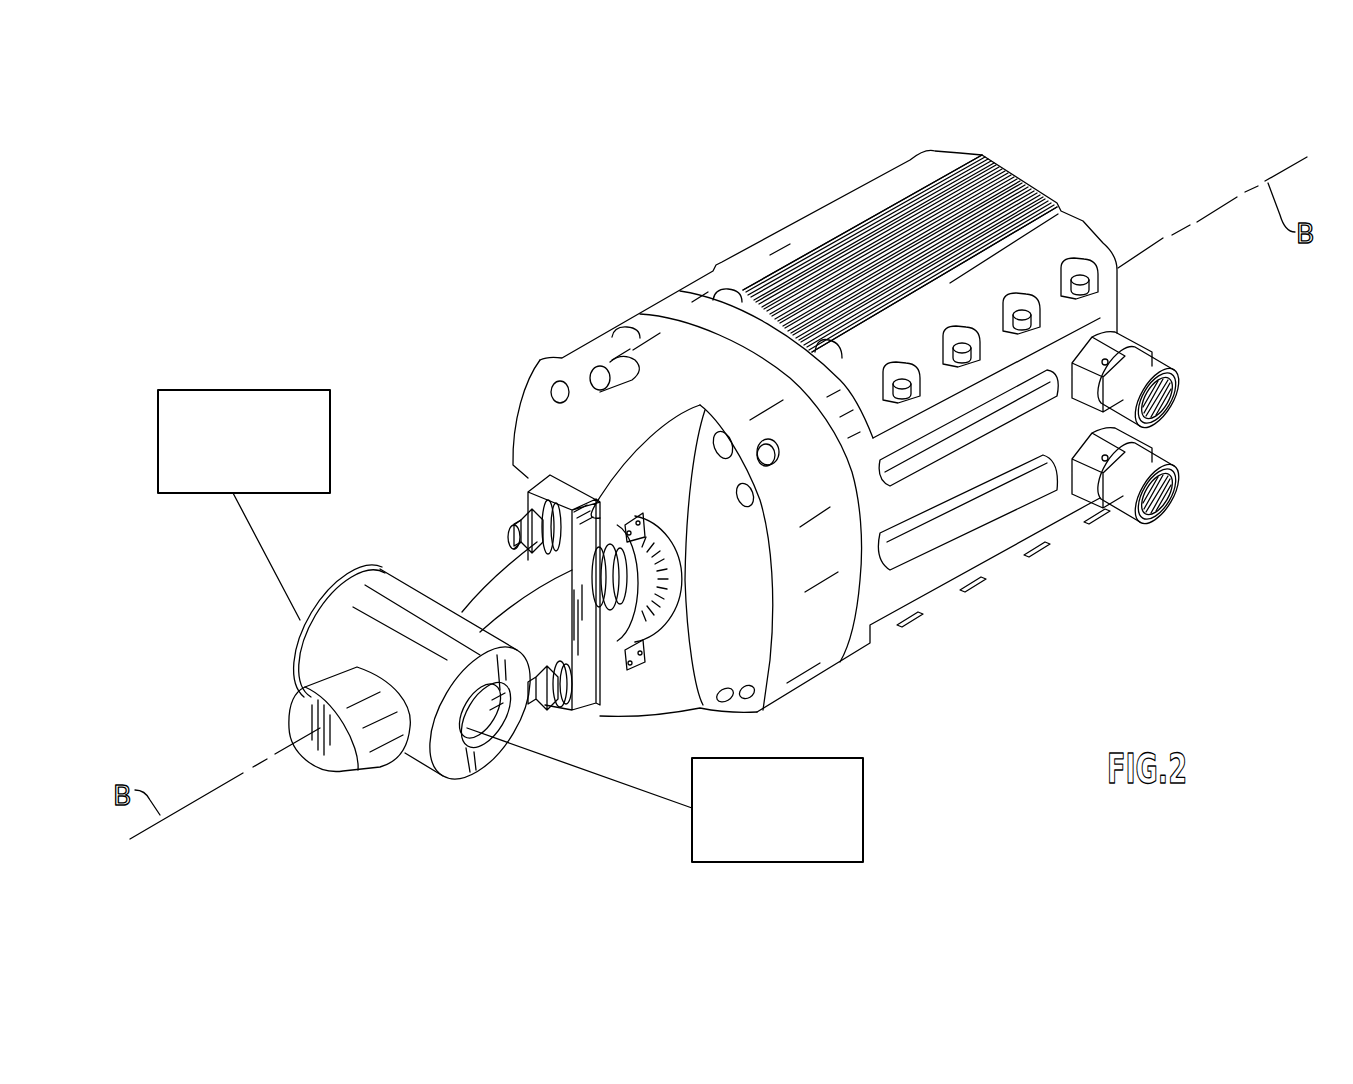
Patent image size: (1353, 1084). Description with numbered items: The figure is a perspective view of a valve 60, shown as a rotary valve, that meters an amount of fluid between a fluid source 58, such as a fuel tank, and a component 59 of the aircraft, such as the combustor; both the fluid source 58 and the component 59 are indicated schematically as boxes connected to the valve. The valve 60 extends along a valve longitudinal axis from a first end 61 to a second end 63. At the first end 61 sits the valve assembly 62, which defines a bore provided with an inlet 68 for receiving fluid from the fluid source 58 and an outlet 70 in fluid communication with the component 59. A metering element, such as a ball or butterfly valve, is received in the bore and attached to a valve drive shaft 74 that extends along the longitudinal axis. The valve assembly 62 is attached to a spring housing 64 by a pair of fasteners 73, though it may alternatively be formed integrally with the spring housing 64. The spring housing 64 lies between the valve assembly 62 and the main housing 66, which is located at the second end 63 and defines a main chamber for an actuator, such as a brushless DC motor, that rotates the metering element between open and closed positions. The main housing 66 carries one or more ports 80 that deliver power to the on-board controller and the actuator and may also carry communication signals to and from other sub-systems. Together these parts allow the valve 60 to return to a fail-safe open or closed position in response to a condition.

The fluid source 58 is at (200, 390).
The component 59 is at (830, 757).
The valve 60 is at (392, 192).
The first end 61 is at (340, 753).
The valve assembly 62 is at (413, 590).
The second end 63 is at (1032, 182).
The spring housing 64 is at (597, 347).
The main housing 66 is at (805, 220).
The inlet 68 is at (297, 653).
The outlet 70 is at (478, 740).
The fasteners 73 is at (507, 535).
The valve drive shaft 74 is at (617, 667).
The ports 80 is at (1167, 417).